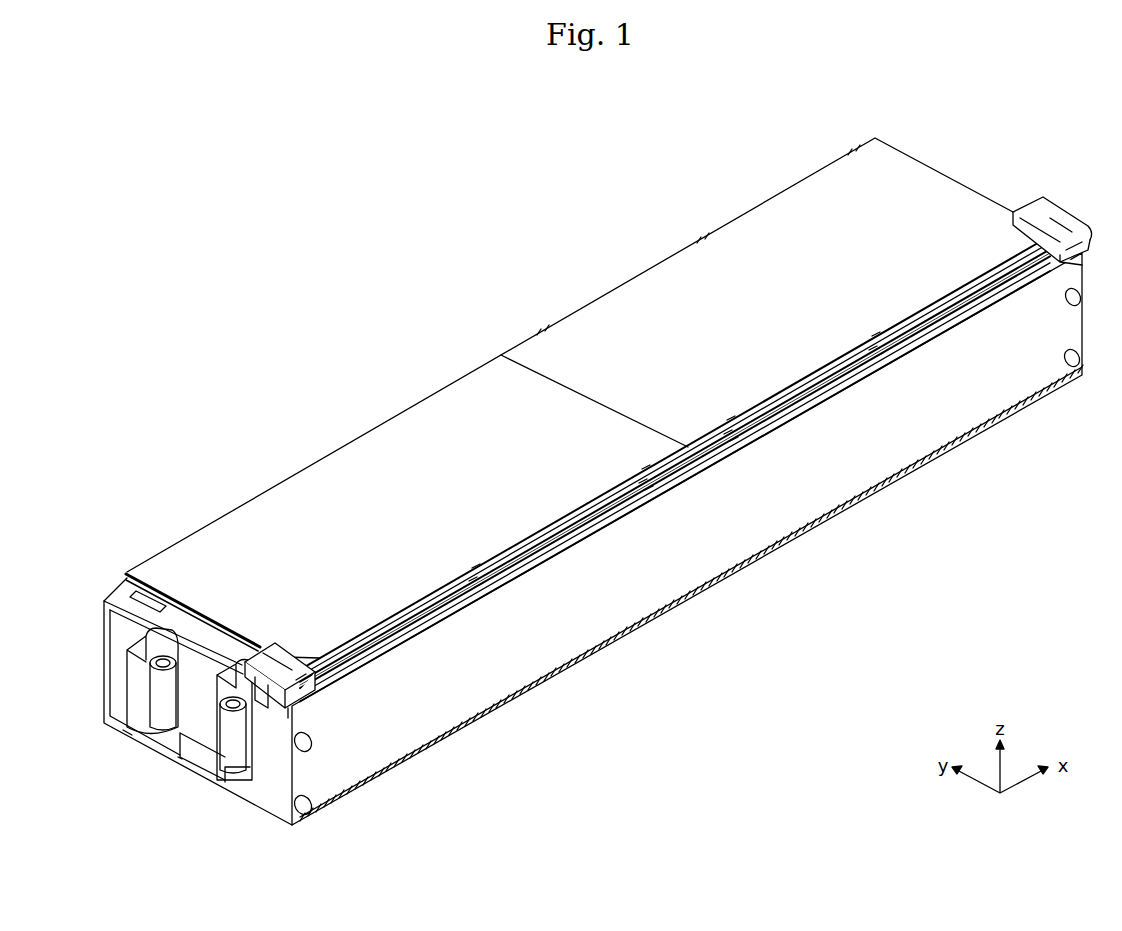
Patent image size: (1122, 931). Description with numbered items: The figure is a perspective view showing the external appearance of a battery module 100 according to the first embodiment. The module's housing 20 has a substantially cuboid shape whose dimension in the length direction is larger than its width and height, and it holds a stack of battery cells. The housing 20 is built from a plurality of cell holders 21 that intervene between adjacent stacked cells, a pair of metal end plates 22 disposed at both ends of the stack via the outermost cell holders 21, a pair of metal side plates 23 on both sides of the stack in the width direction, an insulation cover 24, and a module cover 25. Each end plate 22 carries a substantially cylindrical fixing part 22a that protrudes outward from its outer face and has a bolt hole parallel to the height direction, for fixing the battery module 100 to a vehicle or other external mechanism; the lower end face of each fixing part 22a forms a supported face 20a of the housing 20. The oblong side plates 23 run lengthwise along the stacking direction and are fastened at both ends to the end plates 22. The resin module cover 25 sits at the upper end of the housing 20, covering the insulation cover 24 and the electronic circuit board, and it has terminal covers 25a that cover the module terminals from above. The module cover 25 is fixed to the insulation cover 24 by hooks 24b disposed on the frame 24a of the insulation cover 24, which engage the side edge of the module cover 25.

The battery module 100 is at (269, 307).
The housing 20 is at (932, 199).
The supported face 20a is at (163, 733).
The cell holder 21 is at (355, 798).
The end plate 22 is at (269, 788).
The fixing part 22a is at (128, 720).
The side plate 23 is at (877, 430).
The insulation cover 24 is at (438, 612).
The frame 24a is at (563, 534).
The hook 24b is at (662, 492).
The module cover 25 is at (765, 229).
The terminal cover 25a is at (286, 650).